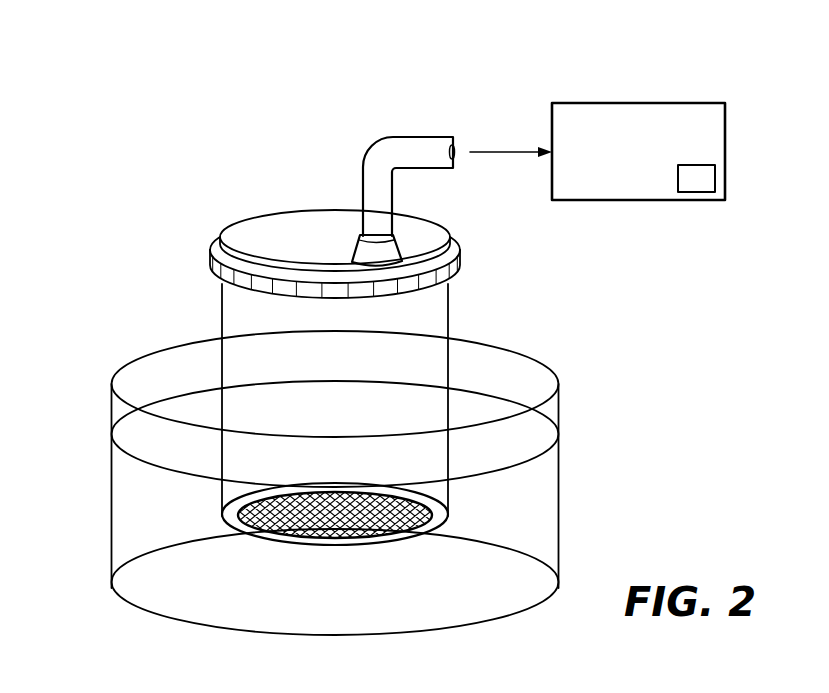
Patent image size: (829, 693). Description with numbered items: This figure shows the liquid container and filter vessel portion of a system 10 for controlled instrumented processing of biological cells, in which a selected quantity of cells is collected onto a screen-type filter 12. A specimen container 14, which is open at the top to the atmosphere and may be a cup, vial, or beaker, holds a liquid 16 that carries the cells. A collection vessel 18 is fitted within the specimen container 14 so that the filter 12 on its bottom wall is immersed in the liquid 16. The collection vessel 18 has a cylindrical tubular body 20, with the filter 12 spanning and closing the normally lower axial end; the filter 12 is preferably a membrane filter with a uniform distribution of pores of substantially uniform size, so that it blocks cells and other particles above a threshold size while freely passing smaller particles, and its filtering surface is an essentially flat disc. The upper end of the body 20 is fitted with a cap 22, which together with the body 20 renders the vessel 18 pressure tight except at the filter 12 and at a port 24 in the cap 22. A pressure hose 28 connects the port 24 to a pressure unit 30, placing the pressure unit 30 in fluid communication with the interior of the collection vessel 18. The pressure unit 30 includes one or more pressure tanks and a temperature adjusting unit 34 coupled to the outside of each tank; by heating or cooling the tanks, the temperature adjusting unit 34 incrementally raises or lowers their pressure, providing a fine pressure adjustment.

The system 10 is at (165, 203).
The screen-type filter 12 is at (338, 540).
The specimen container 14 is at (109, 408).
The liquid 16 is at (548, 506).
The collection vessel 18 is at (240, 298).
The cylindrical tubular body 20 is at (427, 298).
The cap 22 is at (408, 238).
The port 24 is at (375, 252).
The pressure hose 28 is at (416, 137).
The pressure unit 30 is at (626, 188).
The temperature adjusting unit 34 is at (688, 190).